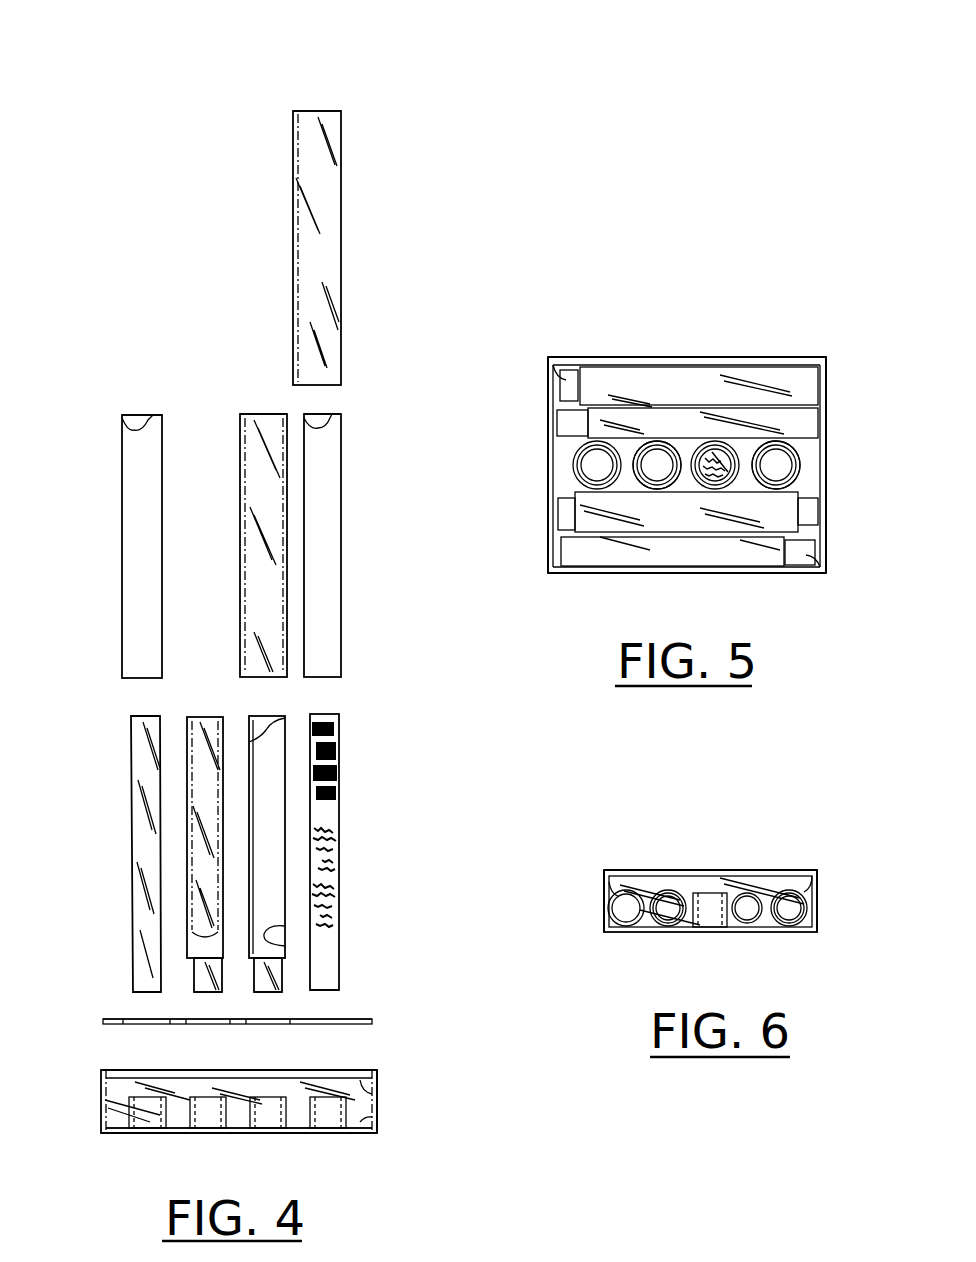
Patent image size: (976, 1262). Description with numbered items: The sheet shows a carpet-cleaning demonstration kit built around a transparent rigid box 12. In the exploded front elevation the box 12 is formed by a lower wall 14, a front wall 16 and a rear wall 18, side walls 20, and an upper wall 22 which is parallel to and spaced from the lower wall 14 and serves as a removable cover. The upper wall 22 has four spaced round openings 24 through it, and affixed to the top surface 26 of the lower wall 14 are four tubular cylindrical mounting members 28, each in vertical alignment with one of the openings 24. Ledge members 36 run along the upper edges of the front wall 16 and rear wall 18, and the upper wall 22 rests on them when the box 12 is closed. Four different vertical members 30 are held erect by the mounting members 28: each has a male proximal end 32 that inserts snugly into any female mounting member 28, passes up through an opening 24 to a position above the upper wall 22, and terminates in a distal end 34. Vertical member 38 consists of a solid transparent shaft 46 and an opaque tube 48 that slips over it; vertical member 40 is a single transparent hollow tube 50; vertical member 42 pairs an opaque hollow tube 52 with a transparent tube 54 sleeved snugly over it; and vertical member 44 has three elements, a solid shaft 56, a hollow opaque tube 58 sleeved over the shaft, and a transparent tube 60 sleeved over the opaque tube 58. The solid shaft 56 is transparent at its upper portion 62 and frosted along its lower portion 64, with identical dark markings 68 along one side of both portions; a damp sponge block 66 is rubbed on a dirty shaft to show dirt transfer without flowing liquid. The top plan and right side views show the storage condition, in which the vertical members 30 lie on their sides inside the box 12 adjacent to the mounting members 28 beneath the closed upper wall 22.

In FIG. 4, the transparent rigid box 12 is at (288, 1124).
In FIG. 5, the transparent rigid box 12 is at (828, 390).
In FIG. 6, the transparent rigid box 12 is at (773, 870).
In FIG. 4, the lower wall 14 is at (178, 1133).
In FIG. 6, the lower wall 14 is at (680, 932).
In FIG. 4, the front wall 16 is at (122, 1098).
In FIG. 5, the front wall 16 is at (740, 575).
In FIG. 6, the front wall 16 is at (604, 883).
In FIG. 5, the rear wall 18 is at (698, 357).
In FIG. 4, the side walls 20 is at (101, 1090).
In FIG. 5, the side walls 20 is at (826, 467).
In FIG. 6, the side walls 20 is at (705, 885).
In FIG. 4, the upper wall 22 is at (360, 1015).
In FIG. 6, the upper wall 22 is at (637, 872).
In FIG. 4, the round openings 24 is at (145, 1022).
In FIG. 5, the round openings 24 is at (573, 462).
In FIG. 4, the top surface 26 is at (362, 1122).
In FIG. 6, the top surface 26 is at (818, 928).
In FIG. 4, the mounting members 28 is at (145, 1097).
In FIG. 5, the mounting members 28 is at (792, 476).
In FIG. 5, the vertical members 30 is at (595, 380).
In FIG. 4, the proximal end 32 is at (138, 985).
In FIG. 4, the distal ends 34 is at (327, 110).
In FIG. 4, the ledge members 36 is at (362, 1080).
In FIG. 5, the ledge members 36 is at (554, 372).
In FIG. 6, the ledge members 36 is at (812, 888).
In FIG. 4, the vertical member 38 is at (143, 394).
In FIG. 4, the vertical member 40 is at (205, 632).
In FIG. 4, the vertical member 42 is at (260, 388).
In FIG. 4, the vertical member 44 is at (314, 76).
In FIG. 4, the solid transparent shaft 46 is at (145, 858).
In FIG. 4, the opaque tube 48 is at (137, 666).
In FIG. 4, the transparent hollow tube 50 is at (186, 745).
In FIG. 4, the opaque hollow tube 52 is at (288, 718).
In FIG. 4, the transparent tube 54 is at (255, 467).
In FIG. 4, the solid shaft 56 is at (385, 852).
In FIG. 4, the hollow opaque tube 58 is at (325, 541).
In FIG. 4, the transparent tube 60 is at (322, 257).
In FIG. 4, the upper portion 62 is at (340, 753).
In FIG. 4, the lower portion 64 is at (338, 852).
In FIG. 5, the damp sponge block 66 is at (718, 458).
In FIG. 4, the dark markings 68 is at (338, 890).